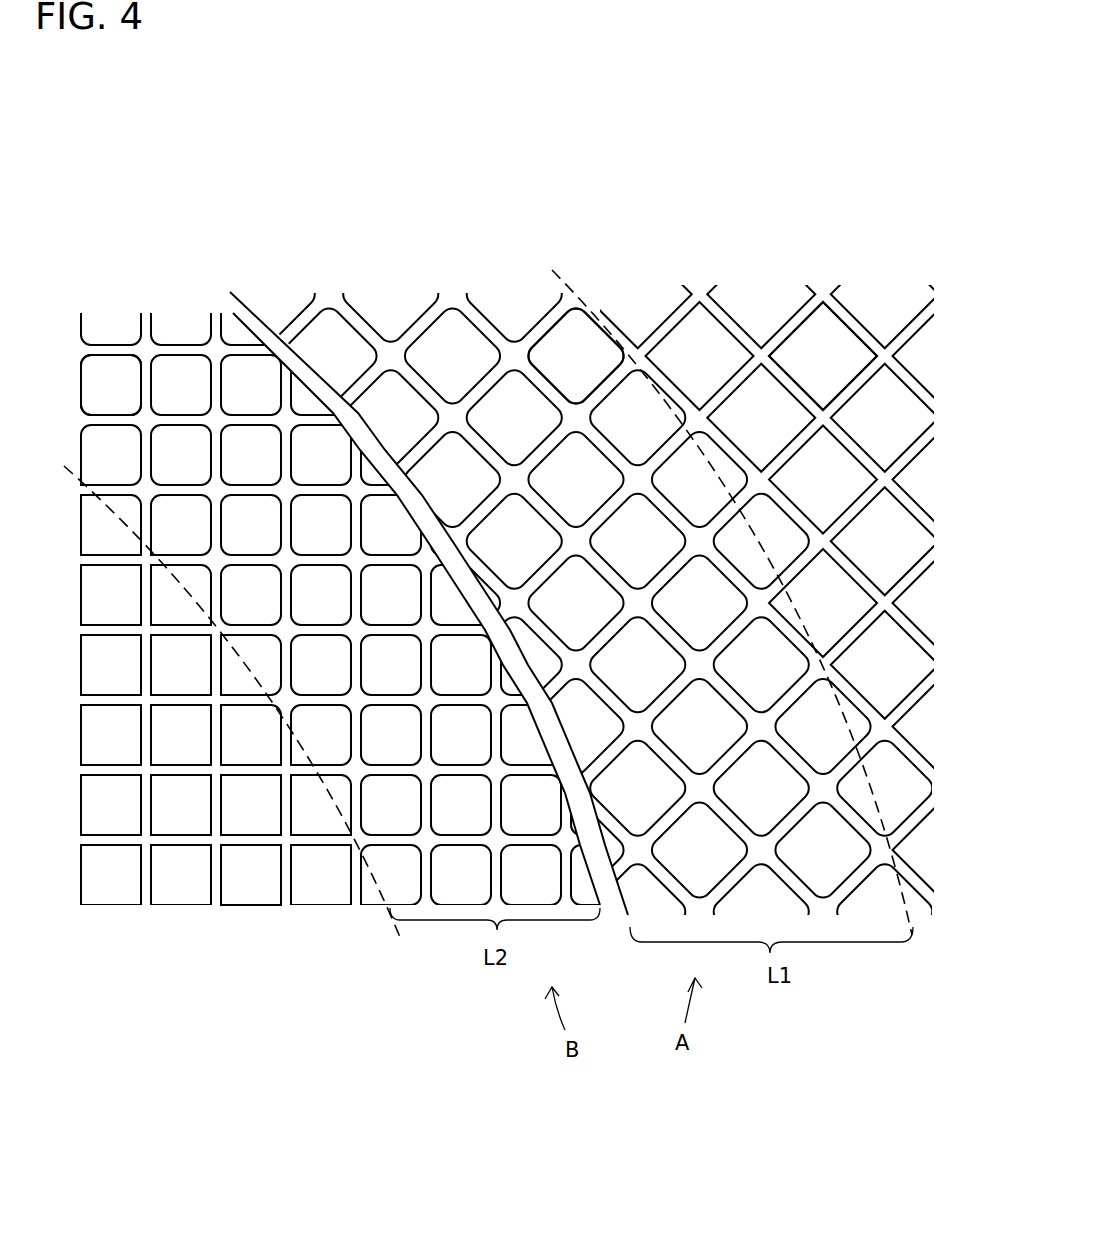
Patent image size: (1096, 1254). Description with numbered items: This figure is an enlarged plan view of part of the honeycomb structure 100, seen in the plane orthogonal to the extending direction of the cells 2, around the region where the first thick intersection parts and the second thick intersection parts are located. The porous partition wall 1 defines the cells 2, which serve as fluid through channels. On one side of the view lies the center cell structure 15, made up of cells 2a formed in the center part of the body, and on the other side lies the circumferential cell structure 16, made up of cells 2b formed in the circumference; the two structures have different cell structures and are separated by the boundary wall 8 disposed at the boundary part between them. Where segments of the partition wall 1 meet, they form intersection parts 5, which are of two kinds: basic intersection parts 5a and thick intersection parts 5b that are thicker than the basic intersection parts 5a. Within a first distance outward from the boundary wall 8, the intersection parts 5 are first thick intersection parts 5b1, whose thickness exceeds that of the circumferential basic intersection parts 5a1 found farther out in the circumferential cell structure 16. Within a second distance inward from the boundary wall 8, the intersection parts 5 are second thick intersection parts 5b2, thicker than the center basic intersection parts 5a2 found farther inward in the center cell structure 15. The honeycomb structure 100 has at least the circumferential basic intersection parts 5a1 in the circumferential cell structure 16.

The honeycomb structure 100 is at (819, 57).
The partition wall 1 is at (188, 348).
The cell 2 is at (497, 591).
The cell 2a is at (116, 372).
The cell 2b is at (553, 352).
The intersection part 5 is at (541, 578).
The basic intersection part 5a is at (541, 579).
The circumferential basic intersection part 5a1 is at (763, 357).
The center basic intersection part 5a2 is at (216, 839).
The thick intersection part 5b is at (506, 553).
The first thick intersection part 5b1 is at (517, 352).
The second thick intersection part 5b2 is at (145, 350).
The boundary wall 8 is at (358, 433).
The center cell structure 15 is at (372, 985).
The circumferential cell structure 16 is at (888, 990).